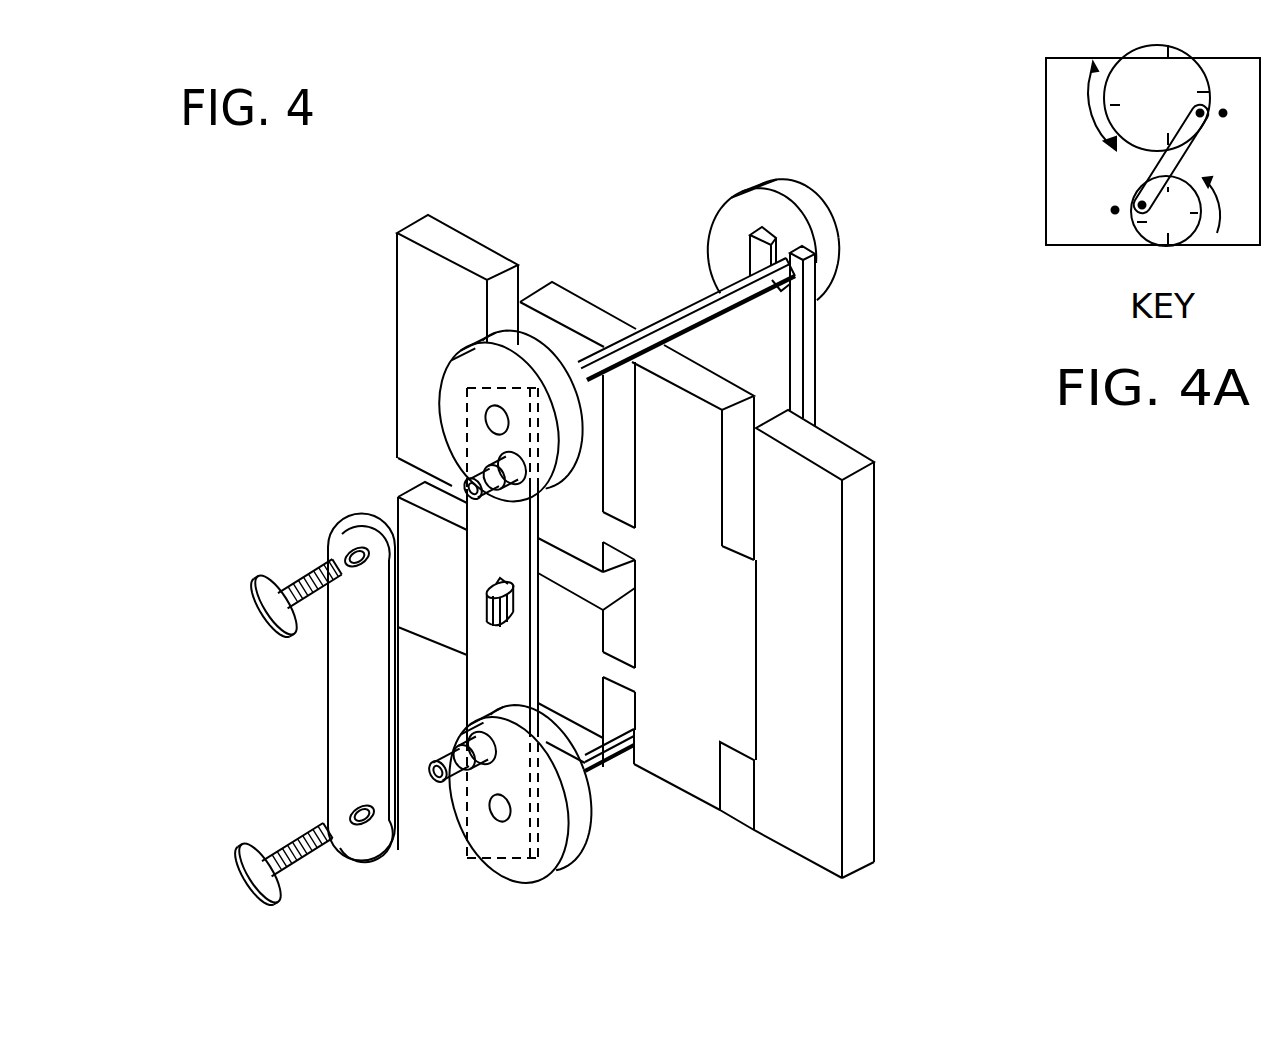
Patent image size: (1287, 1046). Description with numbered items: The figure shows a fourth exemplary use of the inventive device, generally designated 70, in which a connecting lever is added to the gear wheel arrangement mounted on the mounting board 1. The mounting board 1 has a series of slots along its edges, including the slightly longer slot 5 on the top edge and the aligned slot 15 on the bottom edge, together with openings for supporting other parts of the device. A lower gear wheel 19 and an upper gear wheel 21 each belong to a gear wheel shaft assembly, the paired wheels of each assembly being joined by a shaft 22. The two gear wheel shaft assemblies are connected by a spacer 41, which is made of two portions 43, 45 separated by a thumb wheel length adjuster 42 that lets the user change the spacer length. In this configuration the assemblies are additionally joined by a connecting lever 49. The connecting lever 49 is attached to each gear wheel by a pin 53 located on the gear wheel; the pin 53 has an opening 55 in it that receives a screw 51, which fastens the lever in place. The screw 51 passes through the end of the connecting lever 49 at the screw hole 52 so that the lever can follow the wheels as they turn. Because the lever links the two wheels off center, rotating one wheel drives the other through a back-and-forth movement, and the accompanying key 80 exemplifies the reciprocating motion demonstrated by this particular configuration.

In FIG. 4, the mounting board 1 is at (754, 644).
In FIG. 4, the slot 5 is at (626, 430).
In FIG. 4, the slot 15 is at (618, 708).
In FIG. 4, the gear wheel 19 is at (582, 868).
In FIG. 4, the gear wheel 21 is at (466, 344).
In FIG. 4, the shaft 22 is at (680, 311).
In FIG. 4, the spacer 41 is at (467, 697).
In FIG. 4, the thumb wheel length adjuster 42 is at (518, 608).
In FIG. 4, the spacer portion 43 is at (529, 677).
In FIG. 4, the spacer portion 45 is at (529, 549).
In FIG. 4, the connecting lever 49 is at (363, 723).
In FIG. 4, the screw 51 is at (262, 584).
In FIG. 4, the screw hole 52 is at (360, 830).
In FIG. 4, the pin 53 is at (473, 458).
In FIG. 4, the opening 55 is at (472, 496).
In FIG. 4, the fourth exemplary use of the inventive device 70 is at (976, 704).
In FIG. 4A, the key 80 is at (1014, 76).